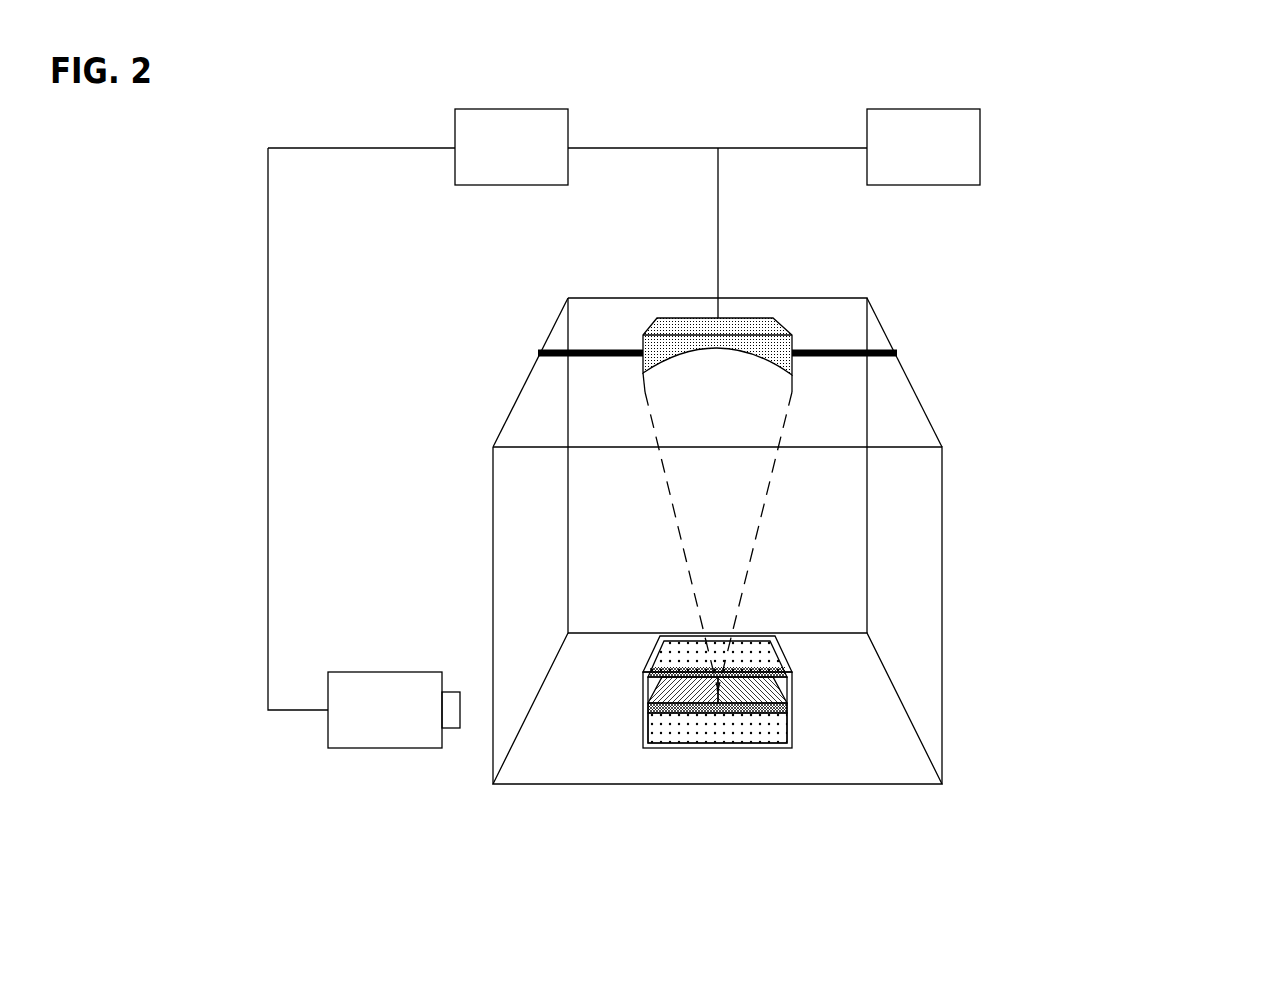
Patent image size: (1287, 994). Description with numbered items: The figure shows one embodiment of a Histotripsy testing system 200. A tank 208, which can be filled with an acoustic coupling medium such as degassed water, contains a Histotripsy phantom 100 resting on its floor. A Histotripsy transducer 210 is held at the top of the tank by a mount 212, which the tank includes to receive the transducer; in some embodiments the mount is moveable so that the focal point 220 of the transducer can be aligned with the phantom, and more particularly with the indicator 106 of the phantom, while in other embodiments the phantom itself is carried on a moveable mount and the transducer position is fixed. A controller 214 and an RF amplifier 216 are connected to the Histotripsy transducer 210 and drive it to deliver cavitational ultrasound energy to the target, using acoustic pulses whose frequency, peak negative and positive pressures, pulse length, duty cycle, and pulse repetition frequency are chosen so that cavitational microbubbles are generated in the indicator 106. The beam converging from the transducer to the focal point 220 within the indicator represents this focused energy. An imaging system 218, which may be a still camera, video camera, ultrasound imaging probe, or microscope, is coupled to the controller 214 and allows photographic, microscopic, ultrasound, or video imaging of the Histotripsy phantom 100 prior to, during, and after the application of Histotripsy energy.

The Histotripsy phantom 100 is at (822, 757).
The indicator 106 is at (648, 708).
The Histotripsy testing system 200 is at (1152, 226).
The tank 208 is at (942, 520).
The Histotripsy transducer 210 is at (657, 320).
The mount 212 is at (897, 353).
The controller 214 is at (567, 213).
The RF amplifier 216 is at (923, 147).
The imaging system 218 is at (364, 448).
The focal point 220 is at (713, 703).